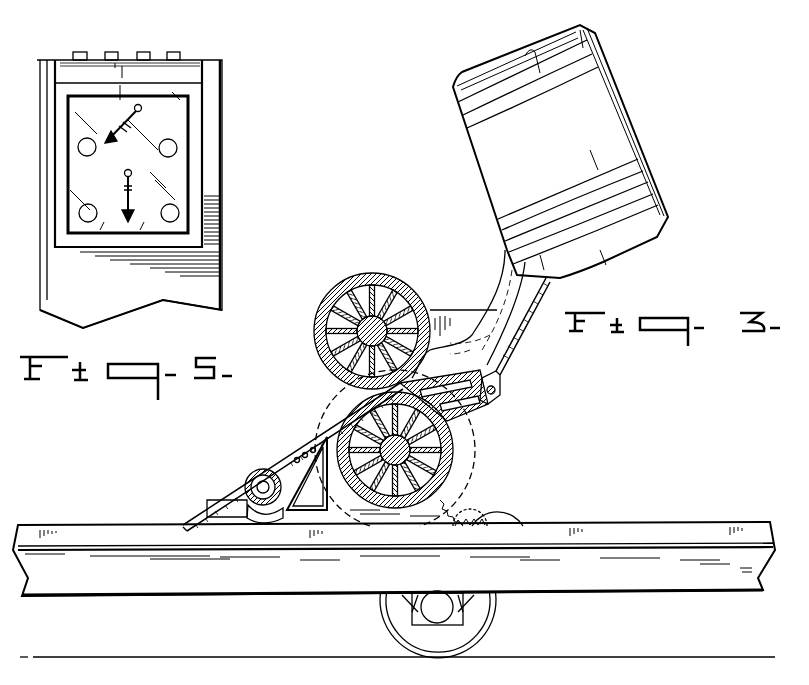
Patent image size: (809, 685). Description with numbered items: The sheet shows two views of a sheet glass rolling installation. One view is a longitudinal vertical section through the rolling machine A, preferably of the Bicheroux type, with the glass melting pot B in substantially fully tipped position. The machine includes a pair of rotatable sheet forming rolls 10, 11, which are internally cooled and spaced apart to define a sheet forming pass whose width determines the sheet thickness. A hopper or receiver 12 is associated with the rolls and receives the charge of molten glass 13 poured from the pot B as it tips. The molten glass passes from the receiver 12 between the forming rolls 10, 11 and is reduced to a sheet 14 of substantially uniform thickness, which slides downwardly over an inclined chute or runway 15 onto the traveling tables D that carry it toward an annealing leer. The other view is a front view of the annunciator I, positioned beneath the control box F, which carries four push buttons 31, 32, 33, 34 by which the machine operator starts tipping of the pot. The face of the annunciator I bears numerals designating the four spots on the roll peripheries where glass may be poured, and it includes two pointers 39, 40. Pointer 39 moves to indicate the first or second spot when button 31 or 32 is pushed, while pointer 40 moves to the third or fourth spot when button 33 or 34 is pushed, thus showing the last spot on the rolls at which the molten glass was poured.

In FIG. 3, the sheet forming roll 10 is at (452, 470).
In FIG. 3, the sheet forming roll 11 is at (364, 276).
In FIG. 3, the hopper or receiver 12 is at (467, 324).
In FIG. 3, the molten glass 13 is at (481, 348).
In FIG. 3, the sheet 14 is at (312, 434).
In FIG. 3, the inclined chute or runway 15 is at (276, 462).
In FIG. 3, the rolling machine A is at (386, 280).
In FIG. 3, the glass melting pot B is at (596, 118).
In FIG. 3, the traveling tables D is at (270, 571).
In FIG. 5, the control box F is at (182, 60).
In FIG. 5, the annunciator I is at (214, 120).
In FIG. 5, the push button 31 is at (70, 44).
In FIG. 5, the push button 32 is at (118, 34).
In FIG. 5, the push button 33 is at (144, 52).
In FIG. 5, the push button 34 is at (175, 52).
In FIG. 5, the pointer 39 is at (118, 132).
In FIG. 5, the pointer 40 is at (124, 194).